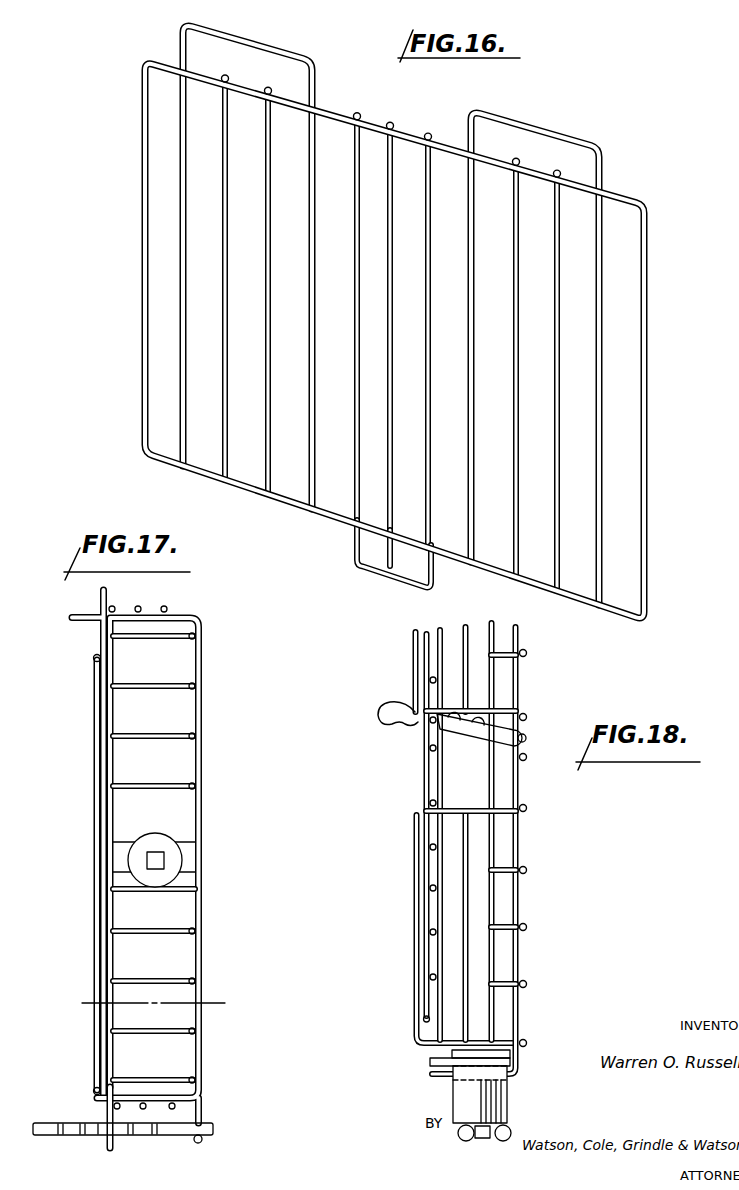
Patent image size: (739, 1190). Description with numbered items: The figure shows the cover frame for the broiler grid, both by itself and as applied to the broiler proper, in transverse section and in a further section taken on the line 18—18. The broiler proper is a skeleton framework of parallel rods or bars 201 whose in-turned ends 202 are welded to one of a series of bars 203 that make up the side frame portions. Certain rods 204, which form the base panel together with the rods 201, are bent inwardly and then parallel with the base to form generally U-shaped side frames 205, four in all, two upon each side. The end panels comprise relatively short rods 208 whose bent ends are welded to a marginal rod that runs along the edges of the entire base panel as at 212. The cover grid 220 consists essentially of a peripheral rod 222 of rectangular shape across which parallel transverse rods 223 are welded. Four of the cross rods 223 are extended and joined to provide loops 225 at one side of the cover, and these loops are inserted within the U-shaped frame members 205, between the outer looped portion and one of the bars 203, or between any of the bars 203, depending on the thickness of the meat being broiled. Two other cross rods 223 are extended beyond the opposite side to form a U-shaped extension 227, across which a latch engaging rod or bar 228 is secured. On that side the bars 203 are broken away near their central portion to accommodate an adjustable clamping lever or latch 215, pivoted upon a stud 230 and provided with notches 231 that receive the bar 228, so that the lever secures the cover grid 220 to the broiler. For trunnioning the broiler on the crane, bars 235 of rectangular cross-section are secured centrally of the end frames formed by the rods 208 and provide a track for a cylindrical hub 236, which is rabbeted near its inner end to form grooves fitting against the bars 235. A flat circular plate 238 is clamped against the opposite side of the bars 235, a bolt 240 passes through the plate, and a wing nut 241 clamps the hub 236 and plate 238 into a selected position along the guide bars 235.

In FIG. 17, the section line 18— 18 is at (156, 1003).
In FIG. 18, the parallel rods 201 is at (526, 924).
In FIG. 18, the in-turned ends 202 is at (503, 928).
In FIG. 17, the side frame bars 203 is at (164, 606).
In FIG. 18, the side frame bars 203 is at (467, 890).
In FIG. 17, the base panel rods 204 is at (201, 672).
In FIG. 17, the U-shaped side frames 205 is at (70, 614).
In FIG. 18, the U-shaped side frames 205 is at (412, 1013).
In FIG. 17, the short rods 208 is at (172, 778).
In FIG. 18, the marginal rod edge portion 212 is at (517, 843).
In FIG. 17, the adjustable clamping lever 215 is at (50, 1112).
In FIG. 18, the adjustable clamping lever 215 is at (388, 700).
In FIG. 16, the cover grid 220 is at (395, 341).
In FIG. 17, the cover grid 220 is at (83, 727).
In FIG. 16, the peripheral rod 222 is at (652, 338).
In FIG. 18, the peripheral rod 222 is at (427, 867).
In FIG. 16, the transverse rods 223 is at (212, 252).
In FIG. 18, the transverse rods 223 is at (438, 752).
In FIG. 16, the loops 225 is at (280, 57).
In FIG. 16, the U-shaped extension 227 is at (368, 568).
In FIG. 17, the U-shaped extension 227 is at (108, 1146).
In FIG. 18, the U-shaped extension 227 is at (430, 780).
In FIG. 16, the latch engaging bar 228 is at (378, 548).
In FIG. 18, the latch engaging bar 228 is at (428, 728).
In FIG. 17, the stud 230 is at (198, 1114).
In FIG. 18, the stud 230 is at (528, 736).
In FIG. 17, the notches 231 is at (158, 1136).
In FIG. 18, the notches 231 is at (423, 727).
In FIG. 17, the guide bars 235 is at (128, 838).
In FIG. 18, the guide bars 235 is at (432, 1062).
In FIG. 18, the cylindrical hub 236 is at (453, 1085).
In FIG. 17, the flat circular plate 238 is at (175, 862).
In FIG. 18, the flat circular plate 238 is at (497, 1055).
In FIG. 17, the bolt 240 is at (147, 861).
In FIG. 18, the bolt 240 is at (455, 1138).
In FIG. 18, the wing nut 241 is at (480, 1094).